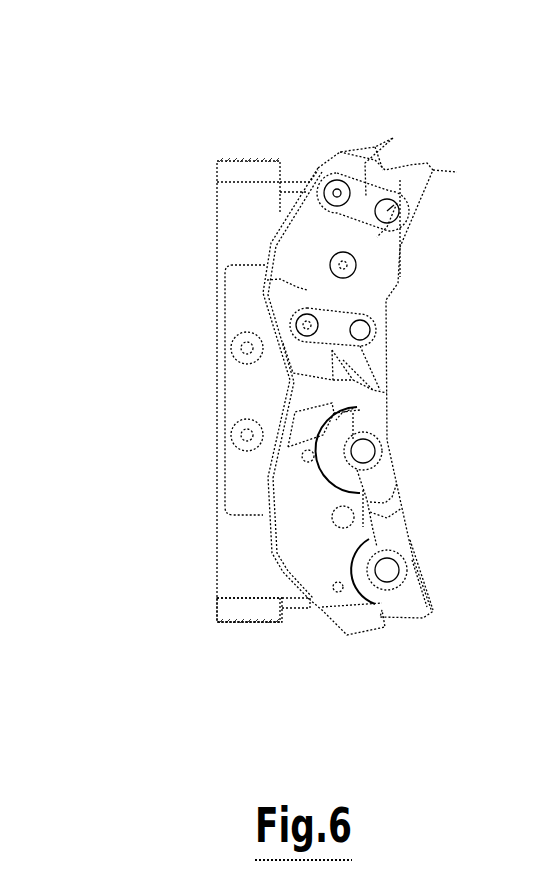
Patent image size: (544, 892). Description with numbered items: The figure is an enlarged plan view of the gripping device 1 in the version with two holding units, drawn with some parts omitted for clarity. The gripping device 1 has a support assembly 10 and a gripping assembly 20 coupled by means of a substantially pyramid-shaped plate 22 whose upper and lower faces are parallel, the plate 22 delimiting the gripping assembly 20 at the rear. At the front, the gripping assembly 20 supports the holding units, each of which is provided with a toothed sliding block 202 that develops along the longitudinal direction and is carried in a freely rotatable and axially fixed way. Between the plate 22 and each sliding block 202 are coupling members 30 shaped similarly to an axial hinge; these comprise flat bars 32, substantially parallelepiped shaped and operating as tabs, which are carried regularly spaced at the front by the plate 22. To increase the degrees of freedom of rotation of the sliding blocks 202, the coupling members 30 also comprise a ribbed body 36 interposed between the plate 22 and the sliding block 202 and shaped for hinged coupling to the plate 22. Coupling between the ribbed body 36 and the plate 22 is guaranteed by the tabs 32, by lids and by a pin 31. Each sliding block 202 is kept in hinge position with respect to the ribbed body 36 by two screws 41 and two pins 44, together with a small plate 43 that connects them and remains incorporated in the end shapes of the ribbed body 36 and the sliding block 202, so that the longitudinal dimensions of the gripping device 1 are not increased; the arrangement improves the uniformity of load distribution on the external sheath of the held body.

The gripping device 1 is at (78, 148).
The support assembly 10 is at (214, 124).
The gripping assembly 20 is at (376, 90).
The plate 22 is at (240, 570).
The coupling members 30 is at (293, 128).
The pin 31 is at (330, 263).
The flat bars (tabs) 32 is at (292, 612).
The ribbed body 36 is at (275, 281).
The screws 41 is at (347, 175).
The small plate 43 is at (372, 176).
The pins 44 is at (410, 203).
The toothed sliding block 202 is at (433, 170).